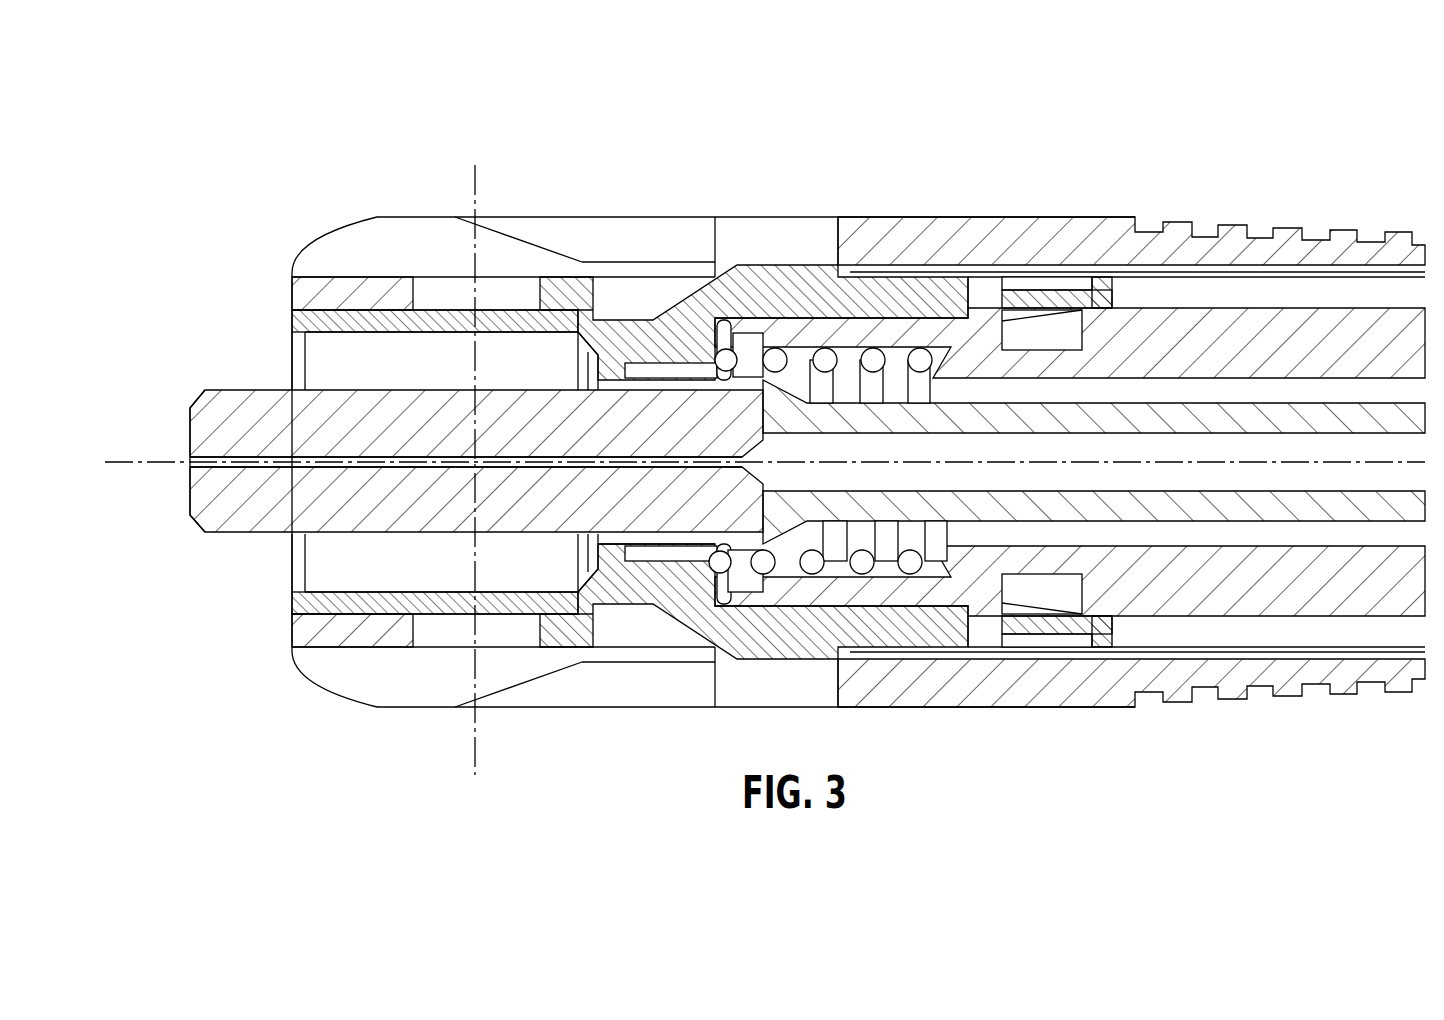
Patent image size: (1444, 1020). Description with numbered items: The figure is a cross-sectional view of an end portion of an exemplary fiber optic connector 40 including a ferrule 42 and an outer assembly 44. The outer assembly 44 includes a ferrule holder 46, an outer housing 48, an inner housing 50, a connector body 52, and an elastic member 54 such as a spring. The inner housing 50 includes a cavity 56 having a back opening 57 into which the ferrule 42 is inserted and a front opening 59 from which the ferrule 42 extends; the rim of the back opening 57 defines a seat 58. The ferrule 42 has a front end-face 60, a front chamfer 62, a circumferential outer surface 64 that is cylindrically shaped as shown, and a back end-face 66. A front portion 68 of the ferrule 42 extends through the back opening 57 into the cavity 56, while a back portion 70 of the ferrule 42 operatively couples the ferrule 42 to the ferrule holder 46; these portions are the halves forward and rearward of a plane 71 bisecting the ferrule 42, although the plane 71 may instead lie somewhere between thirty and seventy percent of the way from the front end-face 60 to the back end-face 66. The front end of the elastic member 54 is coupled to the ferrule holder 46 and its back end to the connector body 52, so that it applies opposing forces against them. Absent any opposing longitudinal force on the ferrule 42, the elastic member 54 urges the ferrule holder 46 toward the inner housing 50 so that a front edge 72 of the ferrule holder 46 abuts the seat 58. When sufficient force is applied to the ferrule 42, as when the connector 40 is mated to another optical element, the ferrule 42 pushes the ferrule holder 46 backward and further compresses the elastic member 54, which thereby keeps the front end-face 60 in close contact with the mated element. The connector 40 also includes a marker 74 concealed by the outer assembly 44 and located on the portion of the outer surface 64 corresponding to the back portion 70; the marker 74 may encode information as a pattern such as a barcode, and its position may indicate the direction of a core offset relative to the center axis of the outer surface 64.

The connector 40 is at (322, 98).
The ferrule 42 is at (166, 530).
The outer assembly 44 is at (960, 210).
The ferrule holder 46 is at (1206, 410).
The outer housing 48 is at (1072, 226).
The inner housing 50 is at (907, 288).
The connector body 52 is at (1312, 335).
The elastic member 54 is at (824, 350).
The cavity 56 is at (322, 560).
The back opening 57 is at (620, 396).
The seat 58 is at (650, 565).
The front opening 59 is at (298, 332).
The front end-face 60 is at (446, 462).
The front chamfer 62 is at (197, 402).
The circumferential outer surface 64 is at (232, 538).
The back end-face 66 is at (770, 522).
The front portion 68 is at (248, 406).
The back portion 70 is at (754, 465).
The plane 71 is at (475, 178).
The front edge 72 is at (626, 556).
The marker 74 is at (587, 333).